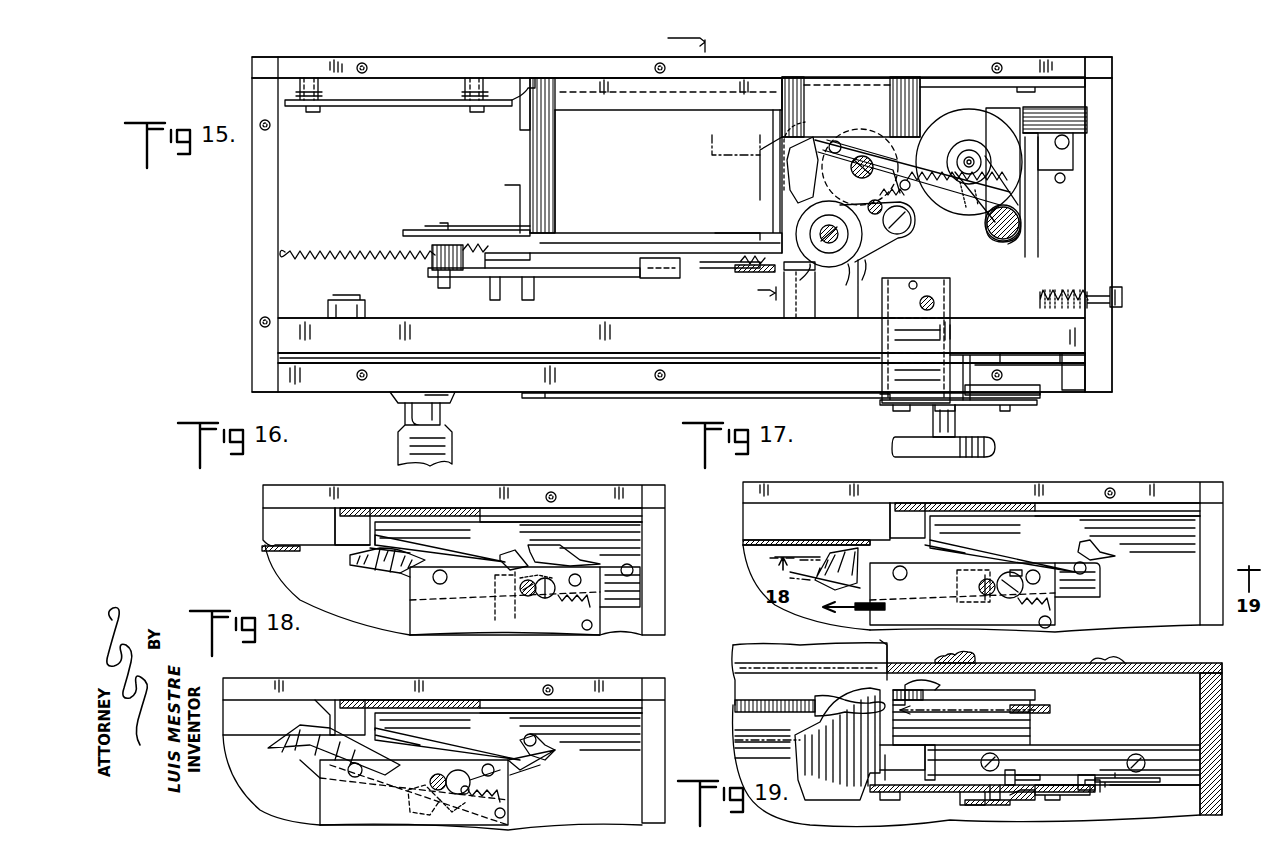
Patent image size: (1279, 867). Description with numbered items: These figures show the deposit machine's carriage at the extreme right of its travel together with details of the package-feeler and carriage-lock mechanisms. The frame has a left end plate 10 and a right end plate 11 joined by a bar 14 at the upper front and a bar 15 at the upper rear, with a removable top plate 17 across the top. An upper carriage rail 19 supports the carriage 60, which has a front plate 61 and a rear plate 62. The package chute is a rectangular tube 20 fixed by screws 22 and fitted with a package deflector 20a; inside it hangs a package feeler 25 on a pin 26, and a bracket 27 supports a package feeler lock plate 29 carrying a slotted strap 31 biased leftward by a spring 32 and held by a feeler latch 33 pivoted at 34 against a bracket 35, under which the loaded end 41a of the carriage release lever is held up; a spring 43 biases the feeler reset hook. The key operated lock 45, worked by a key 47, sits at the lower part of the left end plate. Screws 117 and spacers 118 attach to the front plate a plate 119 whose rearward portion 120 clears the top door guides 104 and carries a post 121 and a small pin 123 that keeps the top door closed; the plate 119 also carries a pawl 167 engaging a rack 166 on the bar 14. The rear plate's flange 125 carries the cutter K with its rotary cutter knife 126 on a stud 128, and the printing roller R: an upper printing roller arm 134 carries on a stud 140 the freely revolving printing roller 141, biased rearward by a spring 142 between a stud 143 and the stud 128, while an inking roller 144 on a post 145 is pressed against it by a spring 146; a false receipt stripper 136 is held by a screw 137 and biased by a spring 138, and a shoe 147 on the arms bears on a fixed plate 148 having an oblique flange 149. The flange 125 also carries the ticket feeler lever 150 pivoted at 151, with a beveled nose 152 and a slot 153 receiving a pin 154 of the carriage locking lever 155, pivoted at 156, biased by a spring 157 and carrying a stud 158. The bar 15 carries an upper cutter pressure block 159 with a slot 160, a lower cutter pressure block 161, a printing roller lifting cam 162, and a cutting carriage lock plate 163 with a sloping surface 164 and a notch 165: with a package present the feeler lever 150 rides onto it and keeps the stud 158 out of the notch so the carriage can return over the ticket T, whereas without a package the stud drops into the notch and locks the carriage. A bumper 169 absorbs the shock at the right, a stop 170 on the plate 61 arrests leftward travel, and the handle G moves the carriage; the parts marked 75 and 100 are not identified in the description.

In FIG. 15, the left end plate 10 is at (262, 258).
In FIG. 15, the right end plate 11 is at (1100, 249).
In FIG. 16, the right end plate 11 is at (658, 522).
In FIG. 17, the right end plate 11 is at (1215, 542).
In FIG. 18, the right end plate 11 is at (660, 686).
In FIG. 19, the right end plate 11 is at (1215, 730).
In FIG. 15, the upper front distance piece 14 is at (510, 392).
In FIG. 15, the upper rear distance piece 15 is at (955, 51).
In FIG. 15, the upper carriage rail 19 is at (699, 312).
In FIG. 15, the tube 20 is at (540, 145).
In FIG. 15, the package deflector 20a is at (628, 238).
In FIG. 15, the screws 22 is at (515, 118).
In FIG. 15, the package feeler 25 is at (735, 232).
In FIG. 15, the pin 26 is at (765, 124).
In FIG. 15, the bracket 27 is at (512, 185).
In FIG. 15, the package feeler lock plate 29 is at (470, 230).
In FIG. 15, the slotted strap 31 is at (560, 240).
In FIG. 15, the spring 32 is at (352, 250).
In FIG. 15, the feeler latch 33 is at (612, 277).
In FIG. 15, the pivot 34 is at (440, 270).
In FIG. 15, the bracket 35 is at (640, 278).
In FIG. 15, the loaded end of carriage release lever 41a is at (488, 262).
In FIG. 15, the spring 43 is at (772, 262).
In FIG. 15, the key operated lock 45 is at (400, 401).
In FIG. 15, the key 47 is at (447, 446).
In FIG. 15, the carriage 60 is at (885, 425).
In FIG. 15, the front plate 61 is at (1026, 352).
In FIG. 15, the rear plate 62 is at (1075, 322).
In FIG. 15, the pins 75 is at (534, 290).
In FIG. 15, the screws 117 is at (890, 409).
In FIG. 15, the spacers 118 is at (992, 355).
In FIG. 15, the plate 119 is at (1045, 403).
In FIG. 15, the portion of plate 120 is at (884, 323).
In FIG. 15, the post 121 is at (428, 216).
In FIG. 15, the pin 123 is at (915, 284).
In FIG. 15, the flange 125 is at (1020, 282).
In FIG. 16, the flange 125 is at (488, 626).
In FIG. 17, the flange 125 is at (1045, 630).
In FIG. 18, the flange 125 is at (336, 797).
In FIG. 19, the flange 125 is at (915, 809).
In FIG. 15, the rotary cutter knife 126 is at (962, 113).
In FIG. 15, the stud 128 is at (970, 150).
In FIG. 16, the stud 128 is at (532, 598).
In FIG. 17, the stud 128 is at (988, 577).
In FIG. 18, the stud 128 is at (435, 776).
In FIG. 15, the upper printing roller arm 134 is at (935, 227).
In FIG. 15, the false receipt stripper 136 is at (1070, 97).
In FIG. 19, the false receipt stripper 136 is at (1050, 709).
In FIG. 15, the screw 137 is at (1040, 225).
In FIG. 15, the spring 138 is at (1060, 152).
In FIG. 15, the stud 140 is at (847, 140).
In FIG. 15, the printing roller 141 is at (822, 152).
In FIG. 15, the spring 142 is at (950, 192).
In FIG. 15, the stud 143 is at (932, 172).
In FIG. 15, the inking roller 144 is at (810, 290).
In FIG. 15, the post 145 is at (880, 250).
In FIG. 15, the spring 146 is at (882, 197).
In FIG. 15, the shoe 147 is at (788, 179).
In FIG. 15, the fixed plate 148 is at (400, 113).
In FIG. 15, the oblique flange 149 is at (545, 86).
In FIG. 16, the ticket feeler lever 150 is at (398, 581).
In FIG. 17, the ticket feeler lever 150 is at (850, 590).
In FIG. 18, the ticket feeler lever 150 is at (300, 779).
In FIG. 19, the ticket feeler lever 150 is at (858, 800).
In FIG. 16, the pivot 151 is at (438, 584).
In FIG. 17, the pivot 151 is at (900, 582).
In FIG. 18, the pivot 151 is at (358, 778).
In FIG. 19, the pivot 151 is at (904, 786).
In FIG. 16, the beveled nose 152 is at (352, 559).
In FIG. 17, the beveled nose 152 is at (828, 560).
In FIG. 18, the beveled nose 152 is at (282, 740).
In FIG. 19, the beveled nose 152 is at (828, 790).
In FIG. 16, the slot 153 is at (500, 625).
In FIG. 17, the slot 153 is at (955, 590).
In FIG. 18, the slot 153 is at (405, 813).
In FIG. 19, the slot 153 is at (965, 779).
In FIG. 16, the pin 154 is at (508, 557).
In FIG. 17, the pin 154 is at (985, 606).
In FIG. 18, the pin 154 is at (455, 809).
In FIG. 19, the pin 154 is at (985, 756).
In FIG. 15, the carriage locking lever 155 is at (1075, 152).
In FIG. 16, the carriage locking lever 155 is at (642, 588).
In FIG. 17, the carriage locking lever 155 is at (1100, 587).
In FIG. 18, the carriage locking lever 155 is at (552, 771).
In FIG. 19, the carriage locking lever 155 is at (1048, 801).
In FIG. 16, the pivot 156 is at (598, 572).
In FIG. 17, the pivot 156 is at (1040, 572).
In FIG. 18, the pivot 156 is at (496, 776).
In FIG. 19, the pivot 156 is at (1020, 811).
In FIG. 16, the spring 157 is at (582, 629).
In FIG. 17, the spring 157 is at (1050, 600).
In FIG. 18, the spring 157 is at (510, 809).
In FIG. 19, the spring 157 is at (1032, 764).
In FIG. 15, the stud 158 is at (1070, 142).
In FIG. 16, the stud 158 is at (634, 571).
In FIG. 17, the stud 158 is at (1088, 568).
In FIG. 18, the stud 158 is at (527, 737).
In FIG. 19, the stud 158 is at (1090, 773).
In FIG. 15, the upper cutter pressure block 159 is at (652, 112).
In FIG. 16, the upper cutter pressure block 159 is at (290, 505).
In FIG. 17, the upper cutter pressure block 159 is at (770, 500).
In FIG. 18, the upper cutter pressure block 159 is at (238, 700).
In FIG. 19, the upper cutter pressure block 159 is at (742, 691).
In FIG. 19, the slot 160 is at (733, 704).
In FIG. 16, the lower cutter pressure block 161 is at (352, 505).
In FIG. 17, the lower cutter pressure block 161 is at (905, 500).
In FIG. 18, the lower cutter pressure block 161 is at (348, 700).
In FIG. 19, the lower cutter pressure block 161 is at (752, 750).
In FIG. 15, the printing roller lifting cam 162 is at (810, 115).
In FIG. 16, the printing roller lifting cam 162 is at (392, 522).
In FIG. 17, the printing roller lifting cam 162 is at (950, 508).
In FIG. 18, the printing roller lifting cam 162 is at (390, 712).
In FIG. 19, the printing roller lifting cam 162 is at (940, 706).
In FIG. 15, the cutting carriage lock plate 163 is at (1095, 102).
In FIG. 16, the cutting carriage lock plate 163 is at (645, 550).
In FIG. 17, the cutting carriage lock plate 163 is at (1170, 520).
In FIG. 18, the cutting carriage lock plate 163 is at (612, 720).
In FIG. 19, the cutting carriage lock plate 163 is at (1160, 786).
In FIG. 16, the sloping surface 164 is at (455, 557).
In FIG. 17, the sloping surface 164 is at (1005, 545).
In FIG. 18, the sloping surface 164 is at (448, 748).
In FIG. 16, the notch 165 is at (540, 549).
In FIG. 17, the notch 165 is at (1088, 543).
In FIG. 18, the notch 165 is at (545, 739).
In FIG. 19, the notch 165 is at (1108, 789).
In FIG. 15, the rack 166 is at (616, 400).
In FIG. 15, the pawl 167 is at (1025, 386).
In FIG. 15, the bumper 169 is at (1090, 291).
In FIG. 15, the stop 170 is at (820, 361).
In FIG. 17, the arm 100 is at (908, 620).
In FIG. 19, the arm 100 is at (892, 656).
In FIG. 19, the top door guides 104 is at (978, 659).
In FIG. 19, the top plate 17 is at (1180, 663).
In FIG. 15, the carriage operating handle G is at (990, 450).
In FIG. 15, the rotary cutter K is at (926, 117).
In FIG. 15, the printing roller R is at (882, 145).
In FIG. 16, the ticket T is at (280, 551).
In FIG. 17, the ticket T is at (806, 532).
In FIG. 19, the ticket T is at (795, 750).